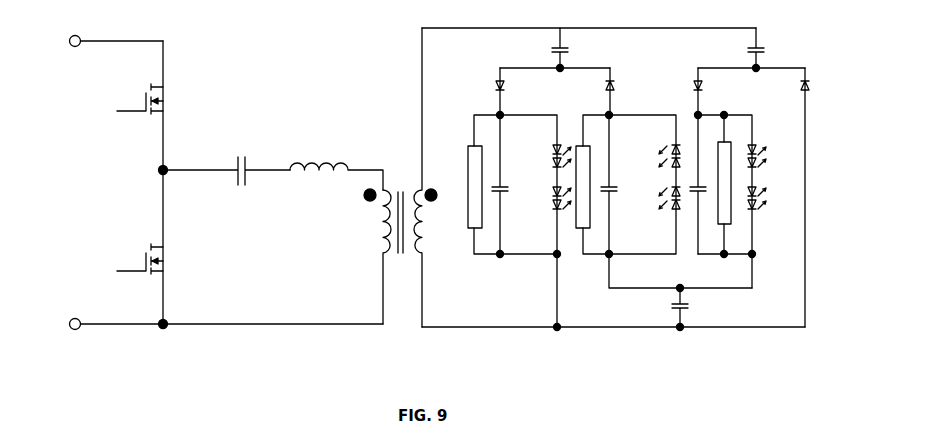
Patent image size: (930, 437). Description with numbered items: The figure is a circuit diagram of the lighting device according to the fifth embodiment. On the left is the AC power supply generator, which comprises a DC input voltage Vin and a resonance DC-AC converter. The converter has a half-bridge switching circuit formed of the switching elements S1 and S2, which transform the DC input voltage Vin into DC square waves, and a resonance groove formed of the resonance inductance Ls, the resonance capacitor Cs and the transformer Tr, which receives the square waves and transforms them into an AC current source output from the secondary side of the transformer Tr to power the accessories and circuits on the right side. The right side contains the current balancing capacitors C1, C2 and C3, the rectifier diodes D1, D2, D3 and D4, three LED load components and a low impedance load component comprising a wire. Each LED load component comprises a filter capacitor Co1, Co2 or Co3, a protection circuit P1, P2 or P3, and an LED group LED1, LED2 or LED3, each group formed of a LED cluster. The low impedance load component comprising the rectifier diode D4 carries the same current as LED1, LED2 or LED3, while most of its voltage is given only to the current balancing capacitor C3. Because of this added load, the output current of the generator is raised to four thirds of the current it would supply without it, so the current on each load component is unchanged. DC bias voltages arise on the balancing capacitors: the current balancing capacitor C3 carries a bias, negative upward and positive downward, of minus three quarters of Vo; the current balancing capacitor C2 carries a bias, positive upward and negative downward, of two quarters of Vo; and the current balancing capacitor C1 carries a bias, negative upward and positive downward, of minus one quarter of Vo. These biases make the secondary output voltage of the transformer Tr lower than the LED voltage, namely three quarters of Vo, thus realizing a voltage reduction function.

The DC input voltage Vin is at (219, 183).
The switching element S1 is at (153, 99).
The switching element S2 is at (153, 259).
The resonance capacitor Cs is at (226, 160).
The resonance inductance Ls is at (336, 163).
The transformer Tr is at (400, 177).
The current balancing capacitor C1 is at (555, 50).
The current balancing capacitor C2 is at (691, 308).
The current balancing capacitor C3 is at (751, 50).
The rectifier diode D1 is at (519, 91).
The rectifier diode D2 is at (623, 91).
The rectifier diode D3 is at (713, 91).
The rectifier diode D4 is at (821, 197).
The filter capacitor Co1 is at (515, 184).
The filter capacitor Co2 is at (624, 184).
The filter capacitor Co3 is at (703, 184).
The LED group LED1 is at (522, 221).
The LED group LED2 is at (631, 185).
The LED group LED3 is at (748, 200).
The protection circuit P1 is at (467, 190).
The protection circuit P2 is at (577, 215).
The protection circuit P3 is at (718, 180).